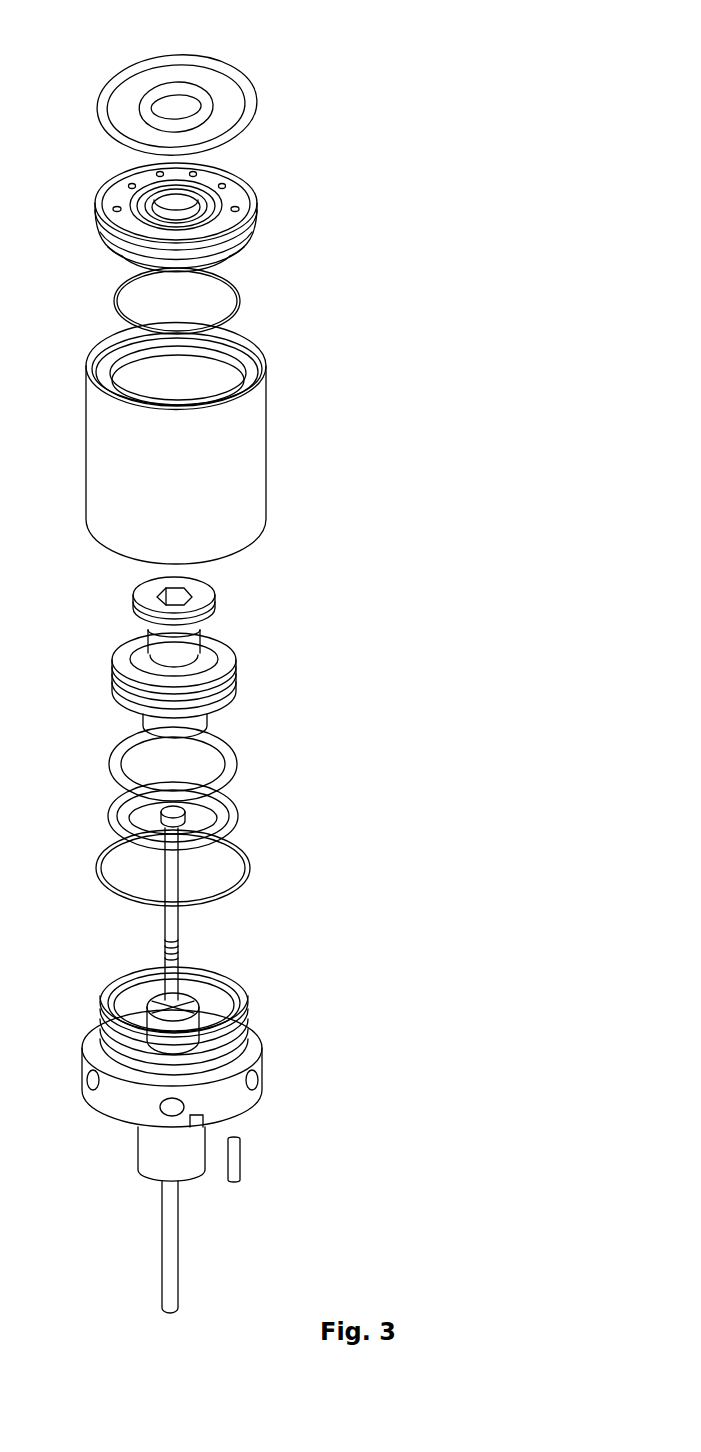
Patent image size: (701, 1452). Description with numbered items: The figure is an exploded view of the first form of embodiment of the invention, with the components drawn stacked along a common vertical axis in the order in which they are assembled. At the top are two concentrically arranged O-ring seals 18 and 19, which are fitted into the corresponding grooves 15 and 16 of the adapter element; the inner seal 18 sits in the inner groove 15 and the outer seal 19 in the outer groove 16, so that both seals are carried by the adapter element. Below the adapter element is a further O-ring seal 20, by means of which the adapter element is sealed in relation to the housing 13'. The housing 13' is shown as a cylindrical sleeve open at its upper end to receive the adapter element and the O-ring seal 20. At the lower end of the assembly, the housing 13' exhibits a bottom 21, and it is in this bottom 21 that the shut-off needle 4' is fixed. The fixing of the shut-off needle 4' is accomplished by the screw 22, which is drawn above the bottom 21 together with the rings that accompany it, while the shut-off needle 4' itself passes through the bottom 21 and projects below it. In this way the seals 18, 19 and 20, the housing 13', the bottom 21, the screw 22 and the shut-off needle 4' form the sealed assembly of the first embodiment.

The O-ring seal 18 is at (180, 88).
The O-ring seal 19 is at (233, 77).
The groove 15 is at (200, 188).
The groove 16 is at (253, 208).
The O-ring seal 20 is at (240, 292).
The housing 13' is at (259, 444).
The screw 22 is at (217, 612).
The shut-off needle 4' is at (201, 1070).
The bottom 21 is at (262, 1063).